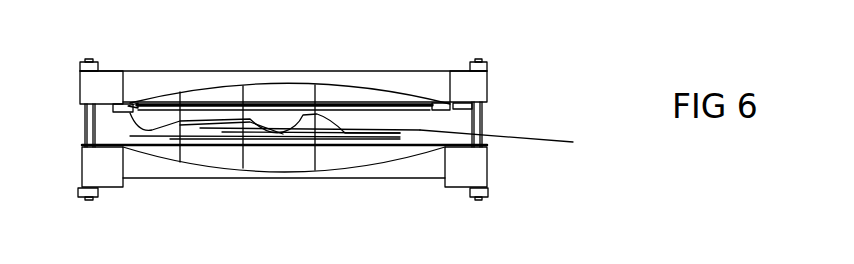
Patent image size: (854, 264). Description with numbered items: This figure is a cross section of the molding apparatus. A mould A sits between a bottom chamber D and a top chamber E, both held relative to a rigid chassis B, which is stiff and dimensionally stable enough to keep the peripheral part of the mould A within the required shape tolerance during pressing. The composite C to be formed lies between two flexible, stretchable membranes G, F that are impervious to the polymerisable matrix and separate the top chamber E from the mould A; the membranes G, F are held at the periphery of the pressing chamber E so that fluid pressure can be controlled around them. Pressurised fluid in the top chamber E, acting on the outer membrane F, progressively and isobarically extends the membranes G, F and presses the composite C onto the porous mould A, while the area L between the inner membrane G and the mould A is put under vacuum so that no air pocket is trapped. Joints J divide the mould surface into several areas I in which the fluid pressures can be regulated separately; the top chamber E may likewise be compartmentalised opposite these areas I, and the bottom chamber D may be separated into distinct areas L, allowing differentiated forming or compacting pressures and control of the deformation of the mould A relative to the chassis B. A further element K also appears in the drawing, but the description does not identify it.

The upper clamping beam K is at (337, 93).
The flexible stretchable membrane G is at (128, 106).
The joints J is at (177, 116).
The bottom chamber D is at (258, 179).
The area between the membrane and the mould L is at (358, 153).
The flexible stretchable membrane F is at (400, 99).
The top chamber E is at (467, 88).
The composite C is at (440, 104).
The mould A is at (400, 126).
The areas I is at (400, 137).
The rigid chassis B is at (463, 168).